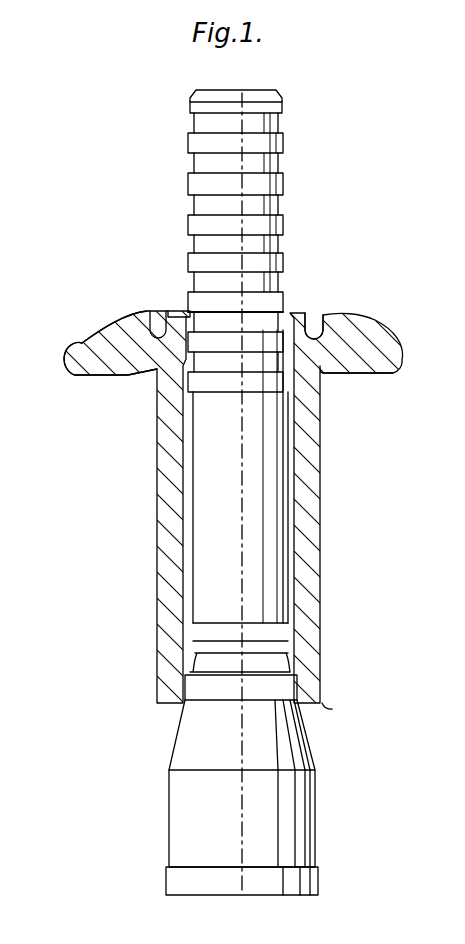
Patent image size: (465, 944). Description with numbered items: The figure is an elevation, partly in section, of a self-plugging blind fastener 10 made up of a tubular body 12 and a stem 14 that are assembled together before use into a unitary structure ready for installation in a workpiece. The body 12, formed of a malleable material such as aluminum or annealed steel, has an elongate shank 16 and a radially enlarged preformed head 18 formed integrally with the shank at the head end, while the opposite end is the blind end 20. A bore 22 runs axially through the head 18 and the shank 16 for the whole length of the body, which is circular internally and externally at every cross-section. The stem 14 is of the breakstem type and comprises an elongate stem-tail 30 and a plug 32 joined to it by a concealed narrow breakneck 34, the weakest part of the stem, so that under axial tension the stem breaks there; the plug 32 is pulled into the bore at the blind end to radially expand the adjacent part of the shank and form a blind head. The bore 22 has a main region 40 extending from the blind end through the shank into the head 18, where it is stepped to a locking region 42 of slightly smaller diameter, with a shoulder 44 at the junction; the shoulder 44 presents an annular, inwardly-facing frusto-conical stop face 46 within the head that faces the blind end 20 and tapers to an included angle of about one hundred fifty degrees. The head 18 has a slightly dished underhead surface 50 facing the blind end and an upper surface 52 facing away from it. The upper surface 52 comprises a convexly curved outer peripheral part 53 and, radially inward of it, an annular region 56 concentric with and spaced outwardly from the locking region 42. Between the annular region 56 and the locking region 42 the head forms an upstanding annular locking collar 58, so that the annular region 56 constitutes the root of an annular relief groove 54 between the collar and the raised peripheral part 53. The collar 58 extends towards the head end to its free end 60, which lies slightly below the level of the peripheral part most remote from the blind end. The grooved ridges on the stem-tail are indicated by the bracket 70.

The self-plugging blind fastener 10 is at (118, 660).
The tubular body 12 is at (156, 548).
The stem 14 is at (185, 213).
The elongate shank 16 is at (324, 443).
The preformed head 18 is at (403, 355).
The blind end 20 is at (324, 706).
The bore 22 is at (293, 498).
The stem-tail 30 is at (285, 262).
The plug 32 is at (316, 788).
The breakneck 34 is at (272, 640).
The main region 40 is at (294, 540).
The locking region 42 is at (280, 306).
The shoulder 44 is at (320, 328).
The stop face 46 is at (300, 375).
The underhead surface 50 is at (130, 374).
The upper surface 52 is at (76, 347).
The outer peripheral part 53 is at (100, 326).
The annular relief groove 54 is at (155, 311).
The annular region 56 is at (158, 311).
The annular locking collar 58 is at (173, 311).
The free end 60 is at (182, 311).
The locking rings 70 is at (288, 103).